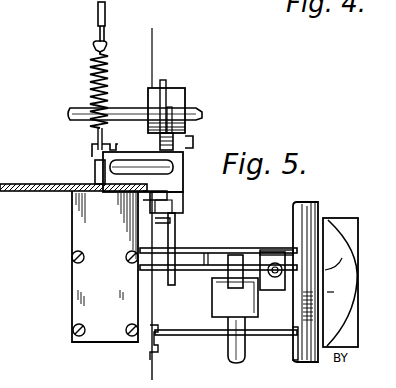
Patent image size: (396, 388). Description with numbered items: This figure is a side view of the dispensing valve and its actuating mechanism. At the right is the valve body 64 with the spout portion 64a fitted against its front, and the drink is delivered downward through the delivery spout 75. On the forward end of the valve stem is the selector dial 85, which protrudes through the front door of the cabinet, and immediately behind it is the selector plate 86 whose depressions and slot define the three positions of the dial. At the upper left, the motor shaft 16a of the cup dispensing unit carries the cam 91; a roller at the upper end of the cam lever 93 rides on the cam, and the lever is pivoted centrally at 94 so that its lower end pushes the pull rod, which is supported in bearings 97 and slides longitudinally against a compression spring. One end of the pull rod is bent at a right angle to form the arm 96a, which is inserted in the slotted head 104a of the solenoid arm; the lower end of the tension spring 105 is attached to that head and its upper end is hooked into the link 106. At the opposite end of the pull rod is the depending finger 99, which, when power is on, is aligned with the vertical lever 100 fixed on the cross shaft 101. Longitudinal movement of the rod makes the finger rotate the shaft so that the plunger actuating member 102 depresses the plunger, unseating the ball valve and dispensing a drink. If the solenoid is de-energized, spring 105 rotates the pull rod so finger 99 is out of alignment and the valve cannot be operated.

The link 106 is at (105, 12).
The tension spring 105 is at (108, 70).
The motor shaft 16a is at (196, 110).
The cam 91 is at (168, 82).
The pivot 94 is at (194, 142).
The cam lever 93 is at (183, 164).
The bearings 97 is at (172, 180).
The arm 96a is at (100, 160).
The slotted head 104a is at (96, 170).
The finger 99 is at (180, 205).
The vertical lever 100 is at (172, 246).
The cross shaft 101 is at (206, 268).
The plunger actuating member 102 is at (240, 262).
The spout portion 64a is at (222, 301).
The valve body 64 is at (269, 327).
The delivery spout 75 is at (233, 342).
The selector plate 86 is at (298, 358).
The dial 85 is at (356, 283).